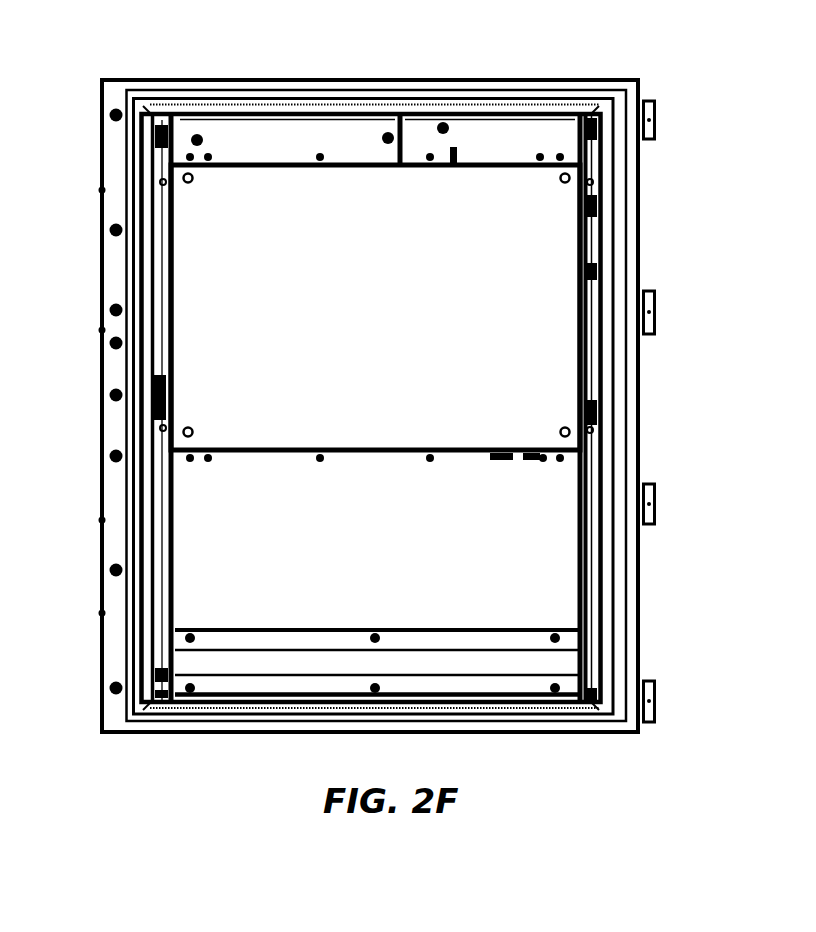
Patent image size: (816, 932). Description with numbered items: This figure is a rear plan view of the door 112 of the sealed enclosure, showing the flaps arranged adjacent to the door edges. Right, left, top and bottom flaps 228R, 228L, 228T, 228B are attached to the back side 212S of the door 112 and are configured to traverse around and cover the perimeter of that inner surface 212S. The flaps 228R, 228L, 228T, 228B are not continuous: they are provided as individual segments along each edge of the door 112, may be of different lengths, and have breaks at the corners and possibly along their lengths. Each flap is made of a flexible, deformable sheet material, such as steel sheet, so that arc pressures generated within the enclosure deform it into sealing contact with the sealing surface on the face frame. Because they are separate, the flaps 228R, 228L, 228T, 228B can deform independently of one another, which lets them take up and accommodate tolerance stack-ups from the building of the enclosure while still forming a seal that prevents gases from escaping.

The door 112 is at (222, 48).
The back side of the door 212S is at (400, 552).
The top flap 228T is at (347, 107).
The bottom flap 228B is at (295, 700).
The left flap 228L is at (145, 267).
The right flap 228R is at (605, 437).